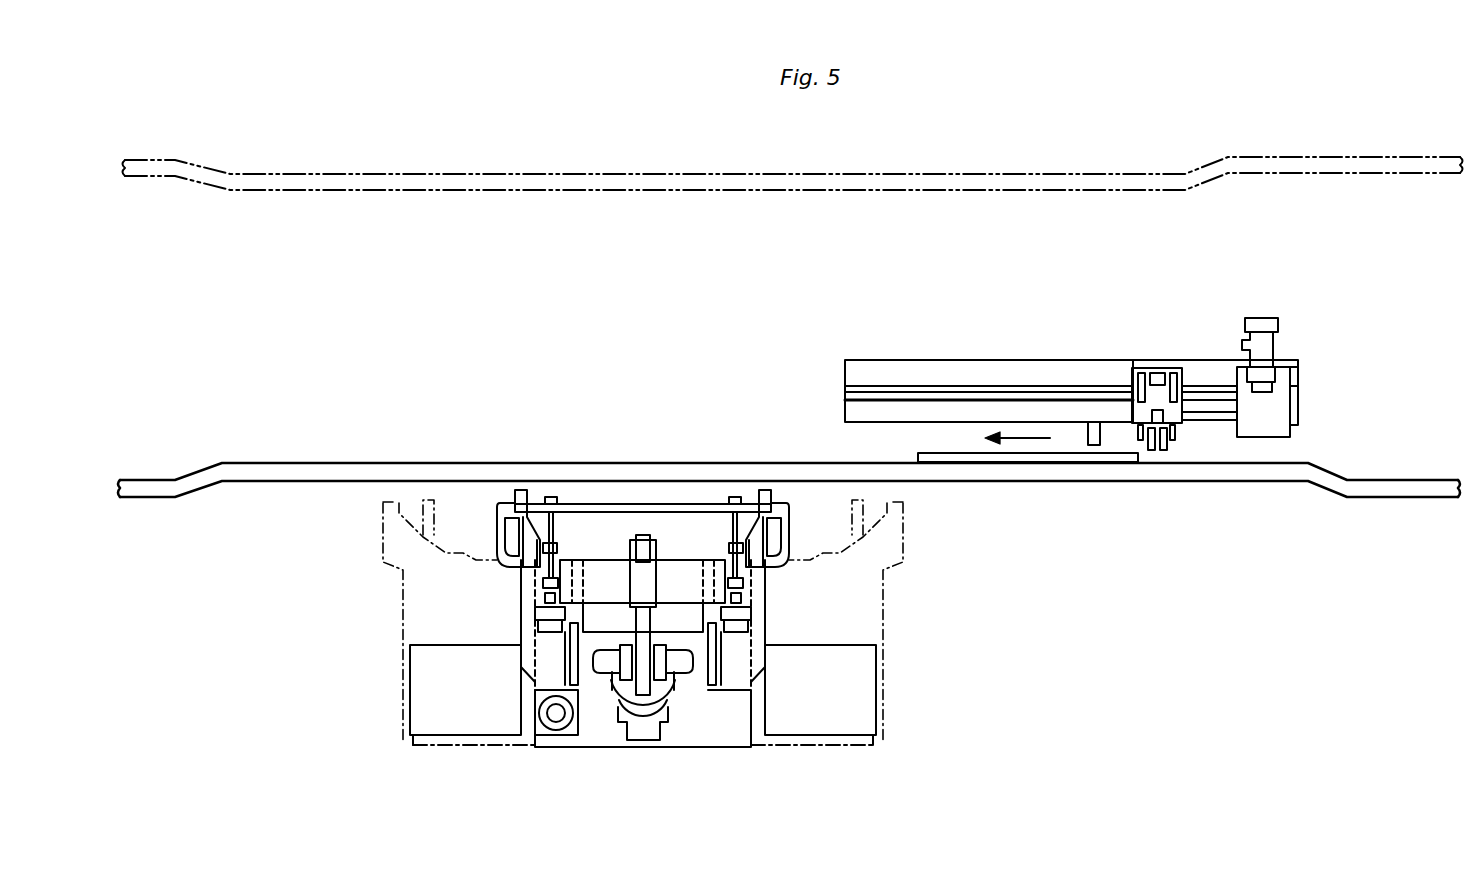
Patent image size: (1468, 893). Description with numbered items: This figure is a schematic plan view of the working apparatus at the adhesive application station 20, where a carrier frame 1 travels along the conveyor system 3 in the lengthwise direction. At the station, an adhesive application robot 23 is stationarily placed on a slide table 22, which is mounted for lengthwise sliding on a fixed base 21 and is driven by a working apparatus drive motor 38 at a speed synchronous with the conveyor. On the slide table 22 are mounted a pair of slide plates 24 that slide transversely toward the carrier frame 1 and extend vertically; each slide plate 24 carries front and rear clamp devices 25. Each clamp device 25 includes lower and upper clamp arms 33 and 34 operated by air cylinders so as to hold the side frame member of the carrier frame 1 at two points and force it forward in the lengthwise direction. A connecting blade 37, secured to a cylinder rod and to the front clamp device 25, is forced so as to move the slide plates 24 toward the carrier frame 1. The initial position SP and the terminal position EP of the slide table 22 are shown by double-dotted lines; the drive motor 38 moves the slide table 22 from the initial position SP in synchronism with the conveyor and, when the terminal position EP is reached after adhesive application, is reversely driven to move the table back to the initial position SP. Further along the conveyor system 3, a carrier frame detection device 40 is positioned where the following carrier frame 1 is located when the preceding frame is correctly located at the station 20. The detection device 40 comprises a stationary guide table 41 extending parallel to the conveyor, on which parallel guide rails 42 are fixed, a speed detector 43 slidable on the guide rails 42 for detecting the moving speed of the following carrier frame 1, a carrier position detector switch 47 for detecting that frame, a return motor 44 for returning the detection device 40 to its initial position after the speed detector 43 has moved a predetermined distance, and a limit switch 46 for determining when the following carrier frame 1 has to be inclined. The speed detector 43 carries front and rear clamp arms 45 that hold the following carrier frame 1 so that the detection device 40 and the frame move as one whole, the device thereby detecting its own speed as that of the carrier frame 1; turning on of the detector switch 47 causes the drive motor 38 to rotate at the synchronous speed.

The carrier frame 1 is at (990, 462).
The conveyor system 3 is at (1412, 490).
The adhesive application station 20 is at (880, 742).
The base 21 is at (820, 737).
The slide table 22 is at (722, 747).
The adhesive application robot 23 is at (643, 705).
The slide plates 24 is at (530, 624).
The clamp devices 25 is at (500, 530).
The lower clamp arm 33 is at (515, 494).
The upper clamp arm 34 is at (774, 492).
The connecting blade 37 is at (672, 566).
The working apparatus drive motor 38 is at (555, 730).
The carrier frame detection device 40 is at (1195, 425).
The stationary guide table 41 is at (1101, 412).
The parallel guide rails 42 is at (917, 412).
The speed detector 43 is at (1178, 428).
The return motor 44 is at (1275, 345).
The clamp arms 45 is at (1151, 450).
The limit switch 46 is at (1092, 445).
The carrier position detector switch 47 is at (1160, 412).
The terminal position EP is at (403, 620).
The initial position SP is at (883, 616).